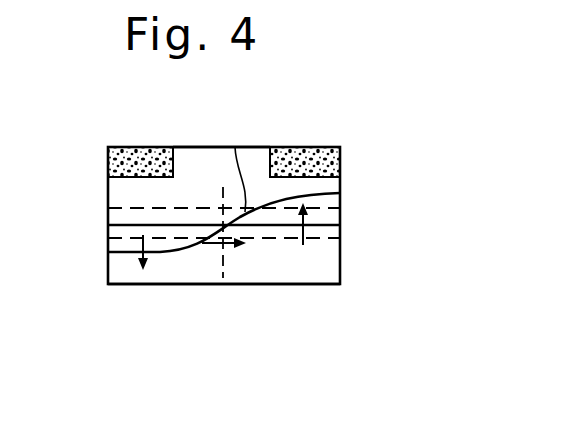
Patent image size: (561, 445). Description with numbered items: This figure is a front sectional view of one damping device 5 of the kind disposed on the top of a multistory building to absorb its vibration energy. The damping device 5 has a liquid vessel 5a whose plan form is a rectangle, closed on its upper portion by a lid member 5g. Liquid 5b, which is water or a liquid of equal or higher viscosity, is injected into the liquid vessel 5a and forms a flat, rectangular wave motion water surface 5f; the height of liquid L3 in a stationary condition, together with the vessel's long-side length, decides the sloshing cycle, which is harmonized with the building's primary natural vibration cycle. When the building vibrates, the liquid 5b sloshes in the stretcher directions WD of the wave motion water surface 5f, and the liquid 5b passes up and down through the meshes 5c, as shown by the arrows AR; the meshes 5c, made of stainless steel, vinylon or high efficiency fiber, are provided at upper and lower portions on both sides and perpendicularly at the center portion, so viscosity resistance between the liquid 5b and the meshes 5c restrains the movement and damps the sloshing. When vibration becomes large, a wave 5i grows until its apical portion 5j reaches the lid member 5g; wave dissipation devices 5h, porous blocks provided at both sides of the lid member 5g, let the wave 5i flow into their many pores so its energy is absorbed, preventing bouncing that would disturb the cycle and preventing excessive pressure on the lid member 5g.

The damping device 5 is at (278, 304).
The liquid vessel 5a is at (340, 270).
The liquid 5b is at (340, 172).
The mesh 5c is at (134, 208).
The wave motion water surface 5f is at (340, 222).
The lid member 5g is at (187, 147).
The wave dissipation device 5h is at (132, 147).
The wave 5i is at (235, 147).
The apical portion of the wave 5j is at (340, 189).
The arrows AR is at (139, 259).
The height of liquid L3 is at (93, 223).
The stretcher directions WD is at (252, 382).